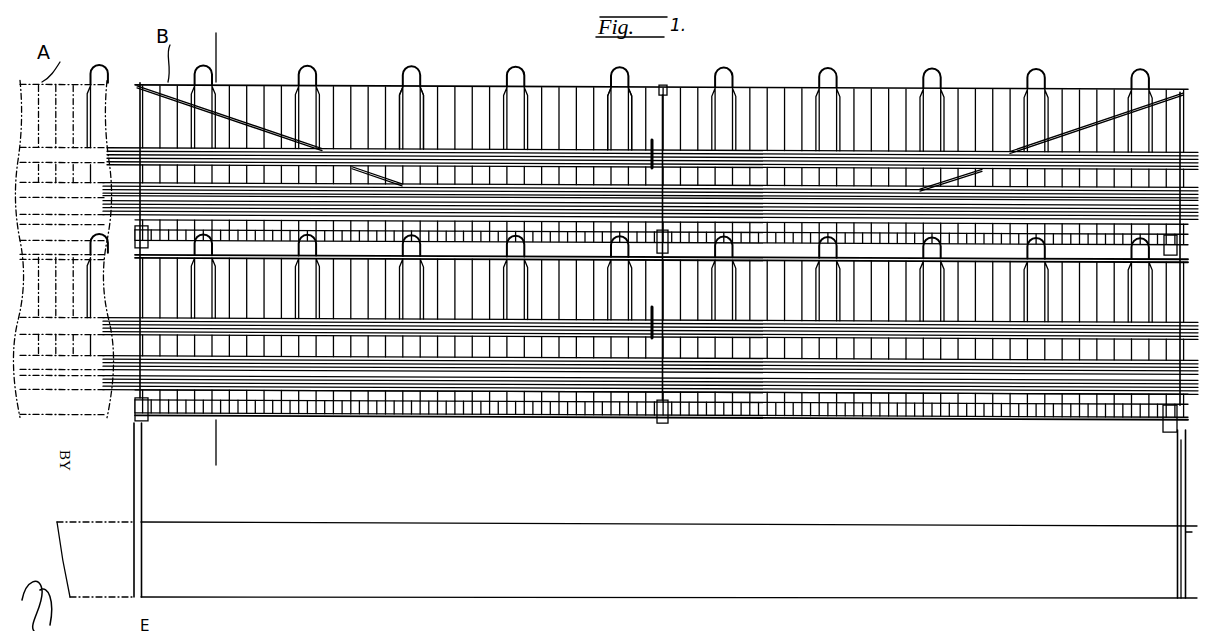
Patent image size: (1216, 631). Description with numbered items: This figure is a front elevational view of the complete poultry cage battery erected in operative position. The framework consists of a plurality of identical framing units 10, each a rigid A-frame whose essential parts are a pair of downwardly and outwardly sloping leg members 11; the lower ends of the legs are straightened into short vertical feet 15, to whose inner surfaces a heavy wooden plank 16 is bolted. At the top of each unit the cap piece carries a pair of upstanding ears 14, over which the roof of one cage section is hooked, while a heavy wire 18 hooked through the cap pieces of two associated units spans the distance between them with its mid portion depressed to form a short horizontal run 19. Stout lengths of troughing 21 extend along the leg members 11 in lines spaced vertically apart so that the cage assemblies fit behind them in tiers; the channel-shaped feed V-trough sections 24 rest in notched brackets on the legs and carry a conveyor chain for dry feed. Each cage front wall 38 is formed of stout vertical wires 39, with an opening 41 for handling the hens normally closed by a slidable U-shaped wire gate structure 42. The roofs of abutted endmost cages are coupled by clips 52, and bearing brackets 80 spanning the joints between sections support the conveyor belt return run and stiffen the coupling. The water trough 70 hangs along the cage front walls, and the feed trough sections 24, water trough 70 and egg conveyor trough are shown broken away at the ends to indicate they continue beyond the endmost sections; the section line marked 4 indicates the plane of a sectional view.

The section line 4- 4 is at (205, 48).
The framing unit 10 is at (148, 475).
The leg member 11 is at (141, 447).
The upstanding ears 14 is at (148, 86).
The vertical feet 15 is at (140, 552).
The wooden plank 16 is at (480, 525).
The heavy wire 18 is at (231, 121).
The horizontal run 19 is at (1205, 455).
The troughing 21 is at (373, 190).
The feed V-trough sections 24 is at (938, 395).
The cage front wall 38 is at (473, 112).
The vertical wires 39 is at (595, 100).
The opening 41 is at (413, 106).
The gate structure 42 is at (736, 77).
The clips 52 is at (666, 85).
The water trough 70 is at (877, 332).
The bearing brackets 80 is at (661, 424).